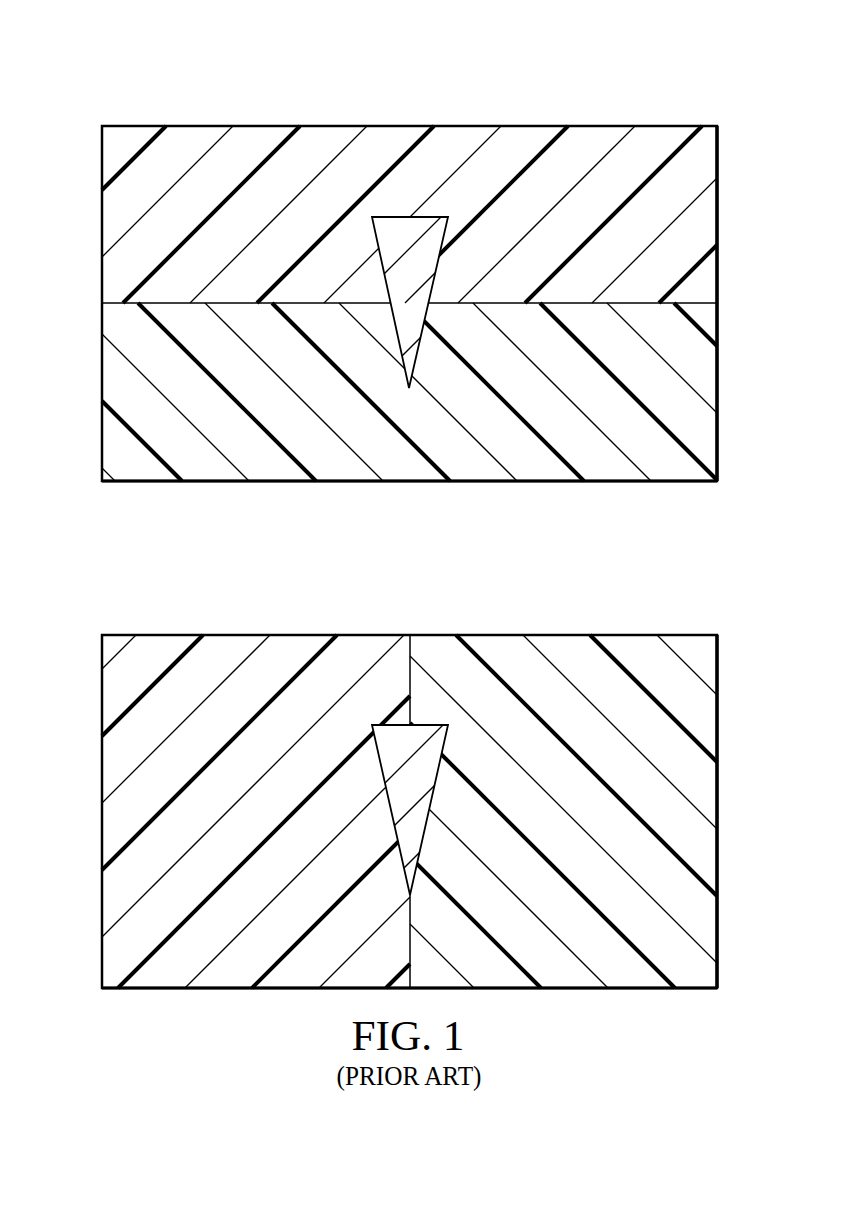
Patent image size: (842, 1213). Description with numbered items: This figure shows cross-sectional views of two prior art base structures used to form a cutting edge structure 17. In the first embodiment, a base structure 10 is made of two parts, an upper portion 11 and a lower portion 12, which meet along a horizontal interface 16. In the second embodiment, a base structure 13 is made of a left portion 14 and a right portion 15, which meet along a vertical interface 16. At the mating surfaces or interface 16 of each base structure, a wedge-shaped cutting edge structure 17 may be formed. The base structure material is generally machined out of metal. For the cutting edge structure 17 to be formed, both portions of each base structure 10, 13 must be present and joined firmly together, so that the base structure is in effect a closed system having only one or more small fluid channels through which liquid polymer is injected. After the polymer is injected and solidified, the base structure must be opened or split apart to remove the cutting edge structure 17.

The base structure 10 is at (250, 72).
The upper portion 11 is at (110, 218).
The lower portion 12 is at (110, 380).
The base structure 13 is at (250, 581).
The left portion 14 is at (110, 832).
The right portion 15 is at (710, 790).
The interface 16 is at (112, 305).
The cutting edge structure 17 is at (400, 225).